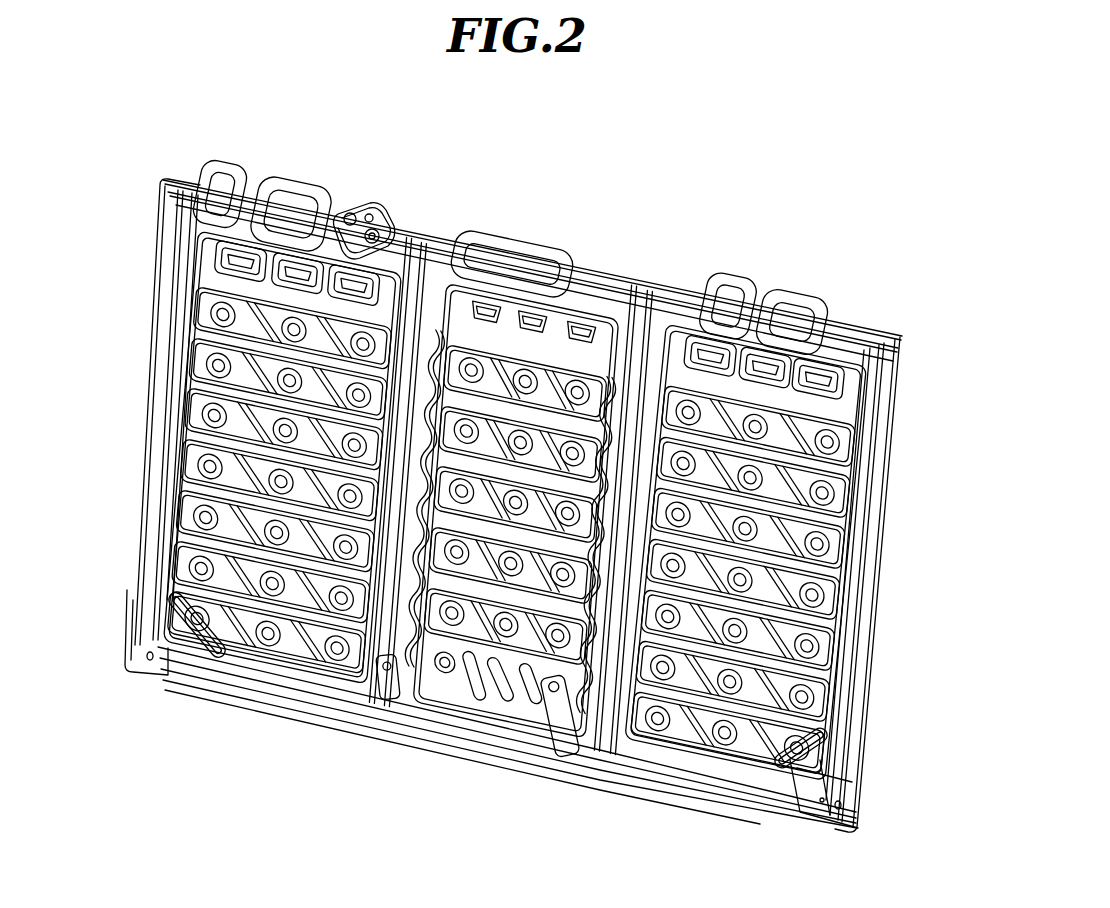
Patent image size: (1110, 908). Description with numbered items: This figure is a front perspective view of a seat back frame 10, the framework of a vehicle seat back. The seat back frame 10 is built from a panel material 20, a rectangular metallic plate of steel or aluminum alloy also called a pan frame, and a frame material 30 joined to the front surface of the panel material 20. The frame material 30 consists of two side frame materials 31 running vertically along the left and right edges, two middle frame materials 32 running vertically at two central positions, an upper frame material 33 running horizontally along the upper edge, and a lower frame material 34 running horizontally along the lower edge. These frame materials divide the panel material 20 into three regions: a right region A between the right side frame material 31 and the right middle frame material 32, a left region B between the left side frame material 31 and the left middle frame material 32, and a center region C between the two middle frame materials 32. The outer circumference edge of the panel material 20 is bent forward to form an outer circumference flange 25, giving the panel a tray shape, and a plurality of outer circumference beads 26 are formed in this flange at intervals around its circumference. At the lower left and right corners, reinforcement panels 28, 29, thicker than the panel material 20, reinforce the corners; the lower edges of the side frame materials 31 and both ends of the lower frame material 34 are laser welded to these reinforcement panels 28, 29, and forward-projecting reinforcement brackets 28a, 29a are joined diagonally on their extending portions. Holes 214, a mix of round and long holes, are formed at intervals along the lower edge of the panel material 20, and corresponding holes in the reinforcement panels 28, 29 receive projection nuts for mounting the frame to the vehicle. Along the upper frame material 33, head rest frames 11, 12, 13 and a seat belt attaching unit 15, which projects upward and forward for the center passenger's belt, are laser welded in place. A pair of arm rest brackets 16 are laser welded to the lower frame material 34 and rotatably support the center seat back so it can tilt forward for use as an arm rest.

The seat back frame 10 is at (638, 188).
The head rest frame 11 is at (225, 172).
The head rest frame 12 is at (790, 290).
The head rest frame 13 is at (486, 236).
The seat belt attaching unit 15 is at (374, 208).
The arm rest bracket 16 is at (372, 712).
The panel material 20 is at (600, 780).
The outer circumference flange 25 is at (900, 428).
The outer circumference bead 26 is at (640, 280).
The reinforcement panel 28 is at (140, 656).
The reinforcement bracket 28a is at (165, 626).
The reinforcement panel 29 is at (855, 830).
The reinforcement bracket 29a is at (824, 748).
The frame material 30 is at (418, 236).
The side frame material 31 is at (178, 288).
The middle frame material 32 is at (665, 290).
The upper frame material 33 is at (608, 270).
The lower frame material 34 is at (475, 740).
The hole 214 is at (151, 660).
The right region A is at (337, 210).
The left region B is at (861, 327).
The center region C is at (579, 263).